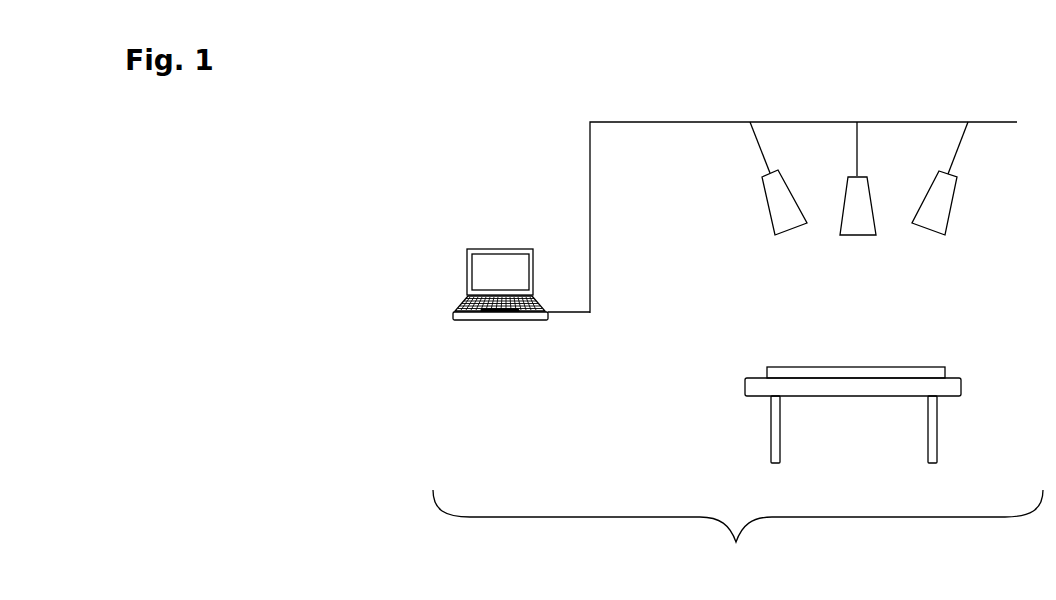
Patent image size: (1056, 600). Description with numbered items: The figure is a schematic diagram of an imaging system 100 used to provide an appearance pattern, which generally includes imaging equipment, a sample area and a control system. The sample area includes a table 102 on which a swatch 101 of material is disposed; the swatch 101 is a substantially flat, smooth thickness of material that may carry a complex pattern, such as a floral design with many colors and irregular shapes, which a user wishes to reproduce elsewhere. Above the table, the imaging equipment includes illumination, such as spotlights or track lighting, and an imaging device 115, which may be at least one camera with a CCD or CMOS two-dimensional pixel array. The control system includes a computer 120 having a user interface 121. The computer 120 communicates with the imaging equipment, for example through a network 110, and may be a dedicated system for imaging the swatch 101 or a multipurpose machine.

The imaging system 100 is at (738, 531).
The swatch 101 is at (935, 367).
The table 102 is at (762, 383).
The network 110 is at (675, 121).
The imaging device 115 is at (850, 200).
The computer 120 is at (509, 302).
The user interface 121 is at (500, 272).